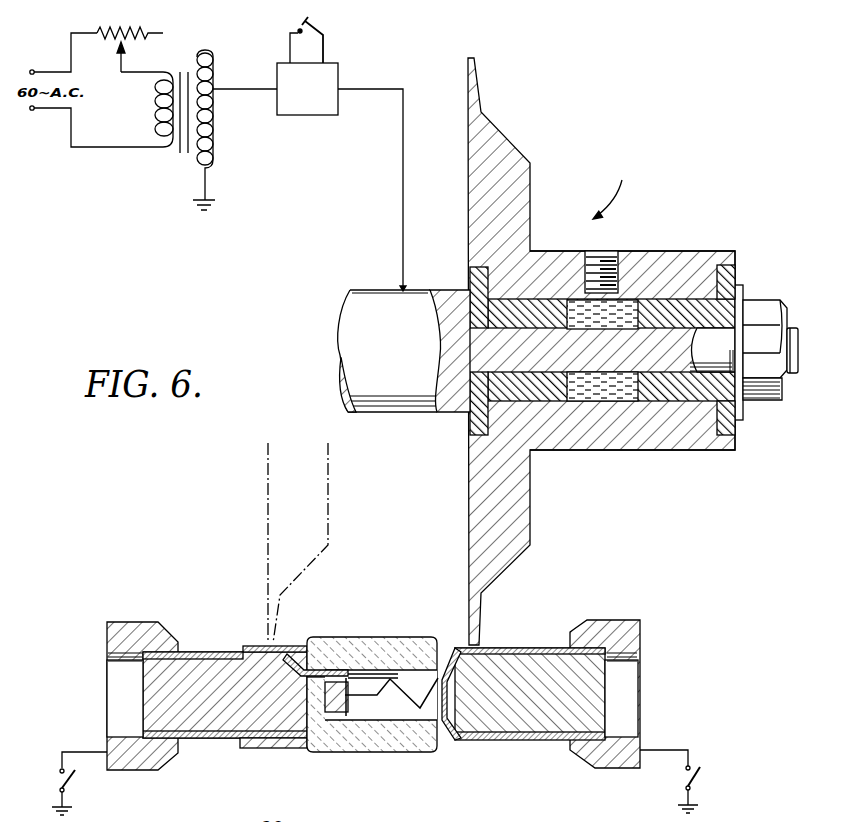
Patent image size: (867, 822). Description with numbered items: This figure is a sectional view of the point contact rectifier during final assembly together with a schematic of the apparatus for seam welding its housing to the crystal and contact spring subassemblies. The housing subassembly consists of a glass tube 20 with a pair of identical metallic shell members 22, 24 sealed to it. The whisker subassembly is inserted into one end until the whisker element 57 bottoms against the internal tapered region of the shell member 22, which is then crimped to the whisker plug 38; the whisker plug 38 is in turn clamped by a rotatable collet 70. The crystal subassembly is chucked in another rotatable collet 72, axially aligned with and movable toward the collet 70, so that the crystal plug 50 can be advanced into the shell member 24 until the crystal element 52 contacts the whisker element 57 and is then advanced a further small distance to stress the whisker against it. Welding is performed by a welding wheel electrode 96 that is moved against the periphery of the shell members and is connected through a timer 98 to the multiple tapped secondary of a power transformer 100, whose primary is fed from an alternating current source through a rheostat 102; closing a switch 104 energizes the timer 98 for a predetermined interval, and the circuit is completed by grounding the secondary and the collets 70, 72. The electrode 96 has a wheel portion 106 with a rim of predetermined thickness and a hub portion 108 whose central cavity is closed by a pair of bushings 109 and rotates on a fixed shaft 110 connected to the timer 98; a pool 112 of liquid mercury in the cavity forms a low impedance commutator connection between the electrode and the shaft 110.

The glass tube 20 is at (357, 645).
The shell member 22 is at (447, 648).
The shell member 24 is at (293, 650).
The whisker plug 38 is at (517, 658).
The crystal plug 50 is at (216, 652).
The crystal element 52 is at (335, 712).
The spring contact 57 is at (368, 700).
The rotatable collet 70 is at (600, 623).
The rotatable collet 72 is at (122, 627).
The welding wheel electrode 96 is at (613, 191).
The timer 98 is at (313, 115).
The power transformer 100 is at (184, 157).
The rheostat 102 is at (133, 28).
The switch 104 is at (318, 27).
The wheel portion 106 is at (512, 153).
The hub portion 108 is at (693, 257).
The bushings 109 is at (469, 278).
The fixed shaft 110 is at (368, 300).
The pool of liquid mercury 112 is at (607, 395).